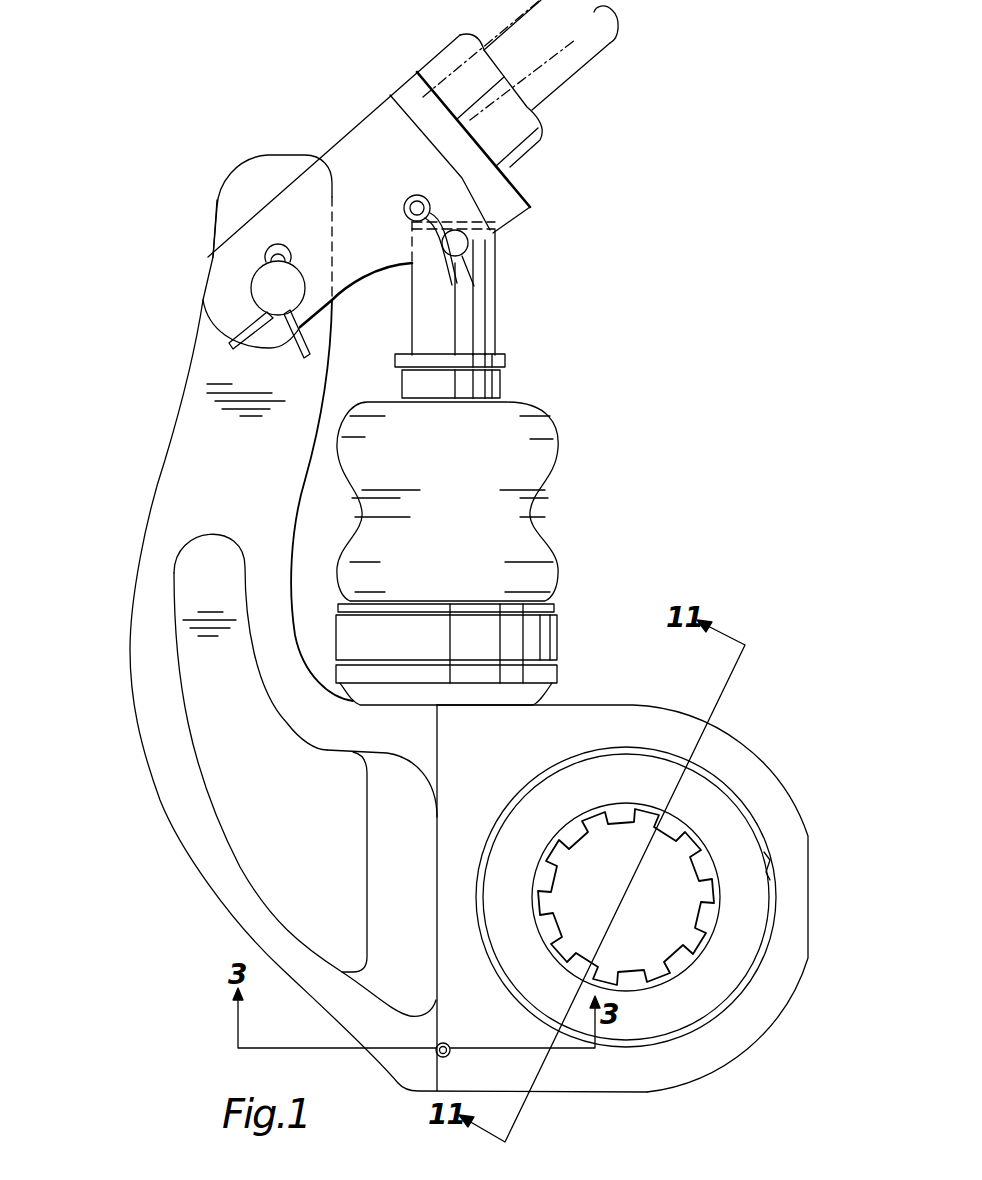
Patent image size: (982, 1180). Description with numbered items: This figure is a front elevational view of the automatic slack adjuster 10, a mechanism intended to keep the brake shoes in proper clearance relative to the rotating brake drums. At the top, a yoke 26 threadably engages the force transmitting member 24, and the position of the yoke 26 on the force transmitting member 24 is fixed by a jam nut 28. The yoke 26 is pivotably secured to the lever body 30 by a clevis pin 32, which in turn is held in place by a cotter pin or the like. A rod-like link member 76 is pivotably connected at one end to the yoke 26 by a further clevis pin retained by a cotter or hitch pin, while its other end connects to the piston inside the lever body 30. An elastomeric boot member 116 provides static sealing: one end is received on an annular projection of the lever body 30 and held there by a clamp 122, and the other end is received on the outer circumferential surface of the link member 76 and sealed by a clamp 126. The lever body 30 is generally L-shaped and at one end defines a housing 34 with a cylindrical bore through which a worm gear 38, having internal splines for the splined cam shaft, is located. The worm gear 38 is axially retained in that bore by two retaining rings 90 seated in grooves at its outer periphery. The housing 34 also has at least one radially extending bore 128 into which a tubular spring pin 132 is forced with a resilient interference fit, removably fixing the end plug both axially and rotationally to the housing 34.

The automatic slack adjuster 10 is at (172, 836).
The force transmitting member 24 is at (565, 65).
The yoke 26 is at (355, 142).
The jam nut 28 is at (537, 143).
The lever body 30 is at (190, 466).
The clevis pin 32 is at (262, 293).
The housing 34 is at (738, 1072).
The worm gear 38 is at (748, 903).
The link member 76 is at (482, 308).
The retaining ring 90 is at (760, 953).
The boot member 116 is at (527, 487).
The clamp 122 is at (545, 637).
The clamp 126 is at (502, 385).
The bore 128 is at (447, 1043).
The spring pin 132 is at (450, 1056).